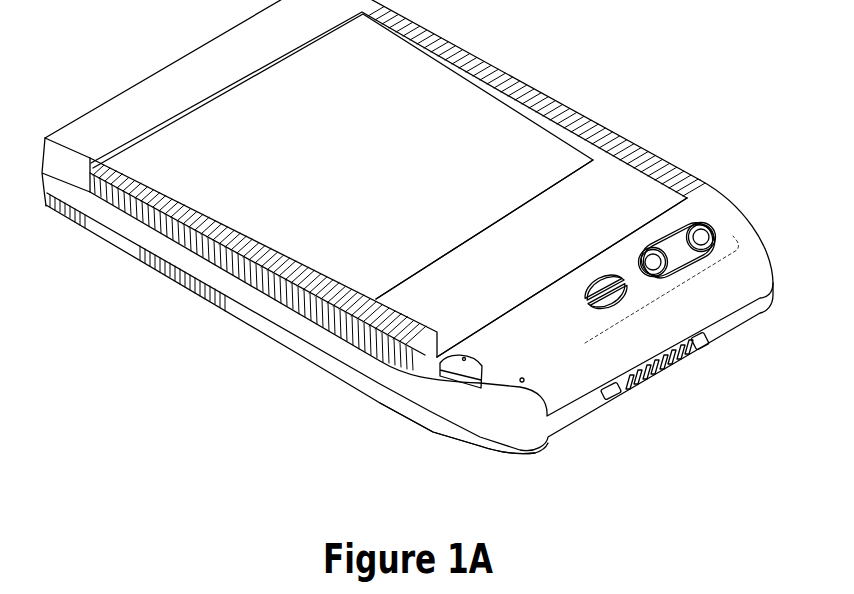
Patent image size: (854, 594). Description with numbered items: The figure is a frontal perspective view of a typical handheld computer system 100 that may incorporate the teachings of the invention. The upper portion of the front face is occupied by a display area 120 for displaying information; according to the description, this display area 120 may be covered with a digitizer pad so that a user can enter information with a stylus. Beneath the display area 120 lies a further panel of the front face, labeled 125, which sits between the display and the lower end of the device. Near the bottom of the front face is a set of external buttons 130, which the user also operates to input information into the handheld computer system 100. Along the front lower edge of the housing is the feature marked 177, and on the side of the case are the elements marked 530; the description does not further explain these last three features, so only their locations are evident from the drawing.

The handheld computer system 100 is at (277, 396).
The display area 120 is at (343, 156).
The input area 125 is at (531, 258).
The external buttons 130 is at (648, 299).
The bottom edge of housing 177 is at (463, 446).
The side buttons 530 is at (699, 354).